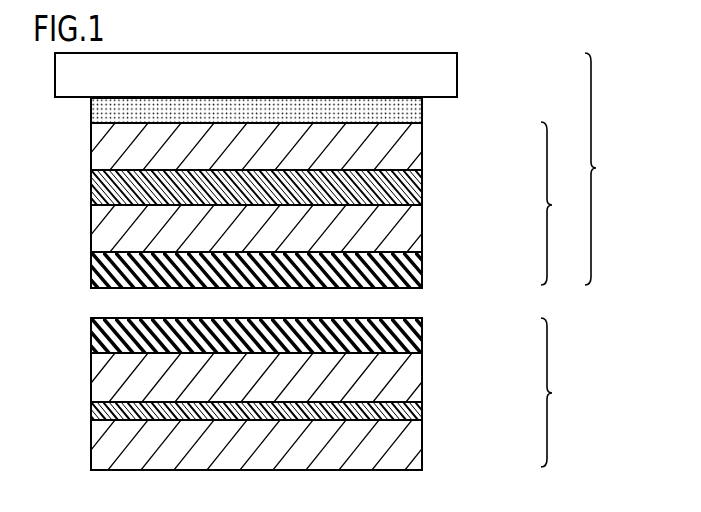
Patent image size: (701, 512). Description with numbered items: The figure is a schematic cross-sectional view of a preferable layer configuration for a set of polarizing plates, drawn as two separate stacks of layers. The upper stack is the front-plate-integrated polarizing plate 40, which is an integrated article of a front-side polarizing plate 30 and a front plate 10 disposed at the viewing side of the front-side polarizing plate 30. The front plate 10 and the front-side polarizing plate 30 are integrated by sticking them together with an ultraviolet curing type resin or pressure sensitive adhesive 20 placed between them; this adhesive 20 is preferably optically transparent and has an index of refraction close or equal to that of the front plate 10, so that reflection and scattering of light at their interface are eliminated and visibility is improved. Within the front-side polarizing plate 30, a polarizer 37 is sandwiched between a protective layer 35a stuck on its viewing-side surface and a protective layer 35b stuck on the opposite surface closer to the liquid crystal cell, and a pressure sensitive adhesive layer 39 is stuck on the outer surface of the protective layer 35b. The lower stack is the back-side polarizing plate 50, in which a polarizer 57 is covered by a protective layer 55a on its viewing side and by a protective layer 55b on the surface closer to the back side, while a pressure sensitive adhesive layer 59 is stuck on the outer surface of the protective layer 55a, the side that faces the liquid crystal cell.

The front plate 10 is at (457, 73).
The ultraviolet curing type resin or pressure sensitive adhesive 20 is at (422, 107).
The front-side polarizing plate 30 is at (561, 203).
The protective layer 35a is at (422, 147).
The polarizer 37 is at (422, 185).
The protective layer 35b is at (422, 227).
The pressure sensitive adhesive layer 39 is at (422, 268).
The front-plate-integrated polarizing plate 40 is at (605, 169).
The back-side polarizing plate 50 is at (561, 392).
The pressure sensitive adhesive layer 59 is at (422, 335).
The protective layer 55a is at (422, 375).
The polarizer 57 is at (422, 407).
The protective layer 55b is at (422, 442).